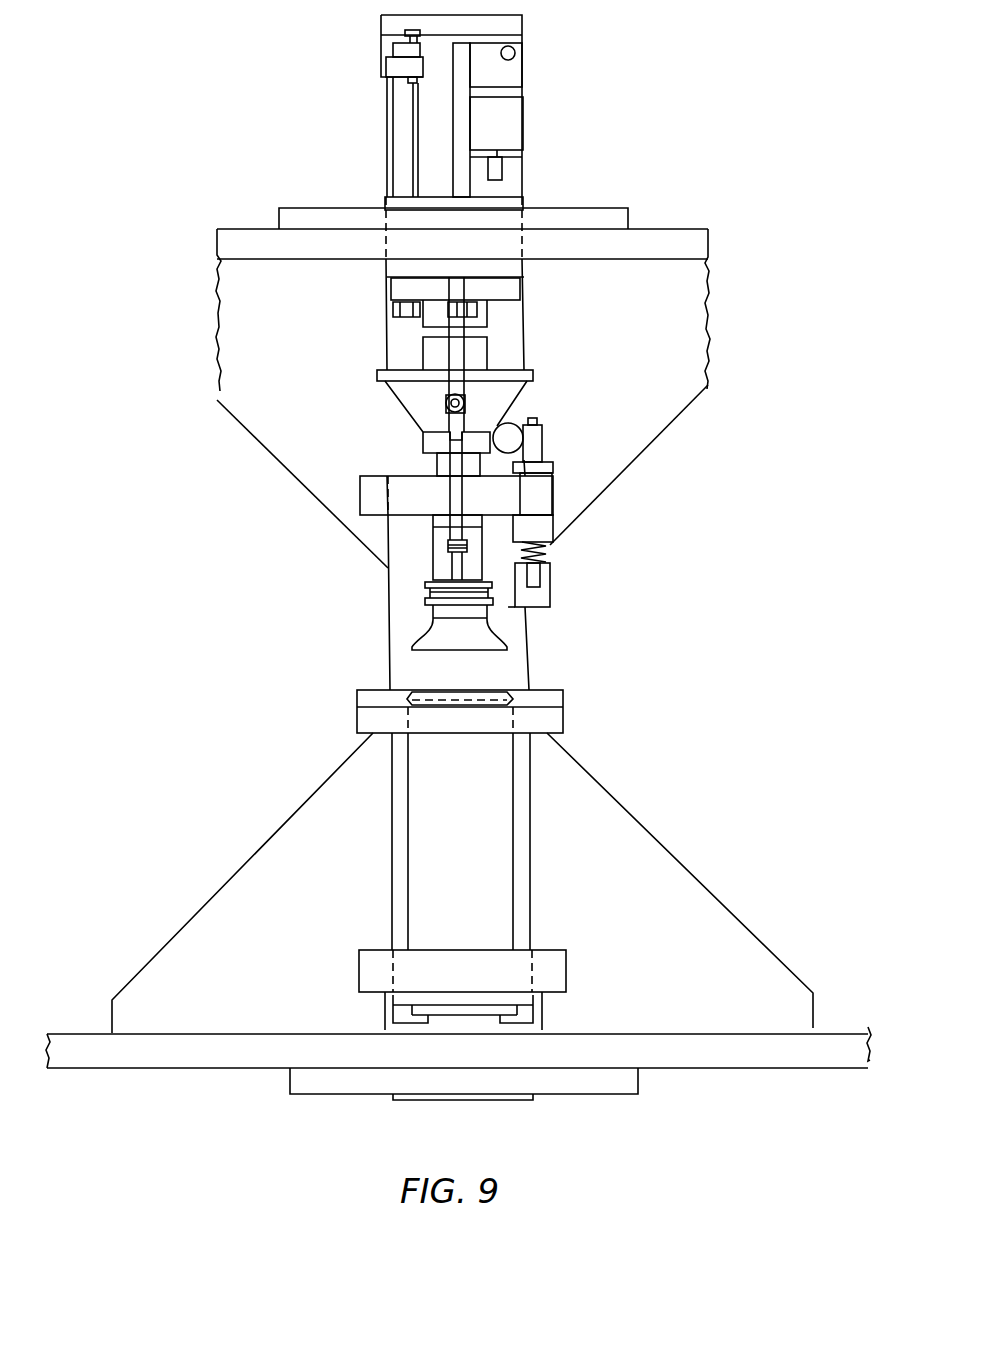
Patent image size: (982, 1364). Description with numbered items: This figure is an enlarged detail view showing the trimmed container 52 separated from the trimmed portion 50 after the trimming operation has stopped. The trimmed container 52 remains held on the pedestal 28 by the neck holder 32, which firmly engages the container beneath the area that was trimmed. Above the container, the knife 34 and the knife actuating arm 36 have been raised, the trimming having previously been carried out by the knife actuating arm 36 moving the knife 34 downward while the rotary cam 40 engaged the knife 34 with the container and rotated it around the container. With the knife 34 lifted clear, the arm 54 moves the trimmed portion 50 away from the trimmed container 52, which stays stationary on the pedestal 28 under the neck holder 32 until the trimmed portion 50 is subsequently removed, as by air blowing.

The pedestal 28 is at (370, 972).
The neck holder 32 is at (537, 717).
The knife 34 is at (508, 607).
The knife actuating arm 36 is at (540, 600).
The rotary cam 40 is at (498, 400).
The trimmed portion 50 is at (423, 638).
The trimmed container 52 is at (433, 837).
The arm 54 is at (443, 610).